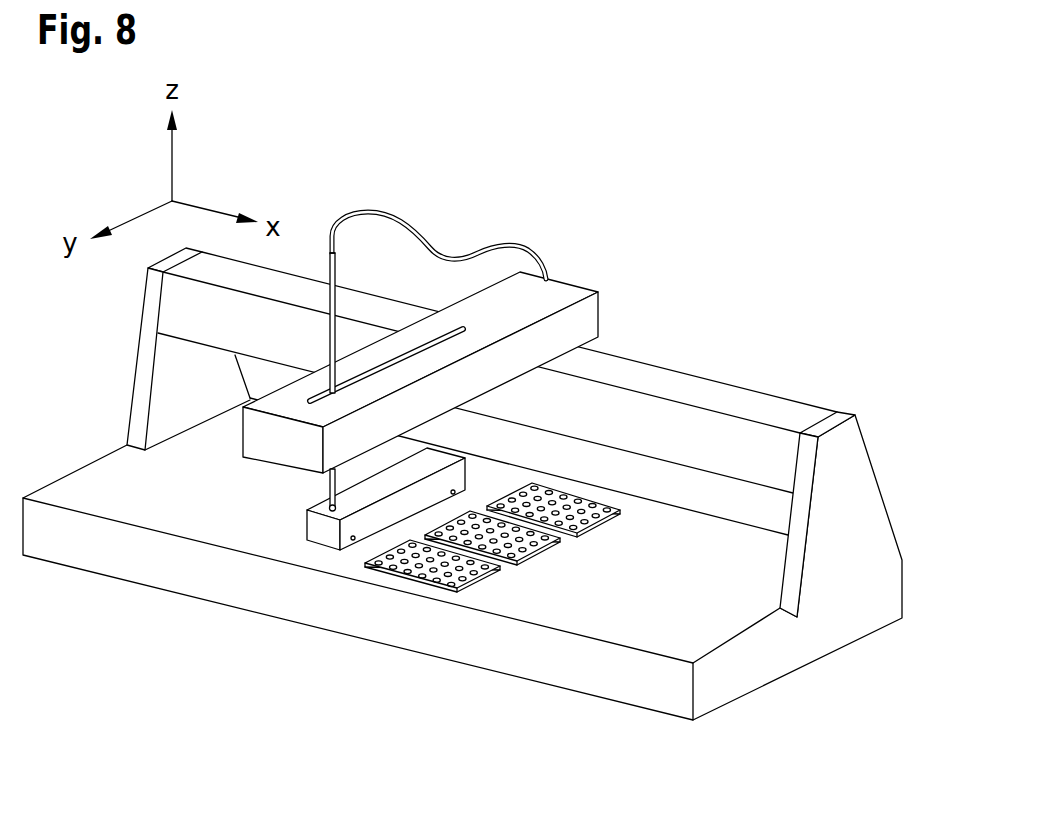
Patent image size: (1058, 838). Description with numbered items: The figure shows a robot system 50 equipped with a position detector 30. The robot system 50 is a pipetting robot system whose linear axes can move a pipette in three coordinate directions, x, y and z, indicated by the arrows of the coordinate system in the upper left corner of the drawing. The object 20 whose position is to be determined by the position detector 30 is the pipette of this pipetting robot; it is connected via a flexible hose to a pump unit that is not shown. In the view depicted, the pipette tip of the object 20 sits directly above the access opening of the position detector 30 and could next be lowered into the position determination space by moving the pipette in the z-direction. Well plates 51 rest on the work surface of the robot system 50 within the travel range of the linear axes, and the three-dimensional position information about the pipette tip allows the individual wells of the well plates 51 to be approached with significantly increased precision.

The object 20 is at (318, 486).
The position detector 30 is at (327, 533).
The robot system 50 is at (745, 270).
The well plates 51 is at (415, 572).